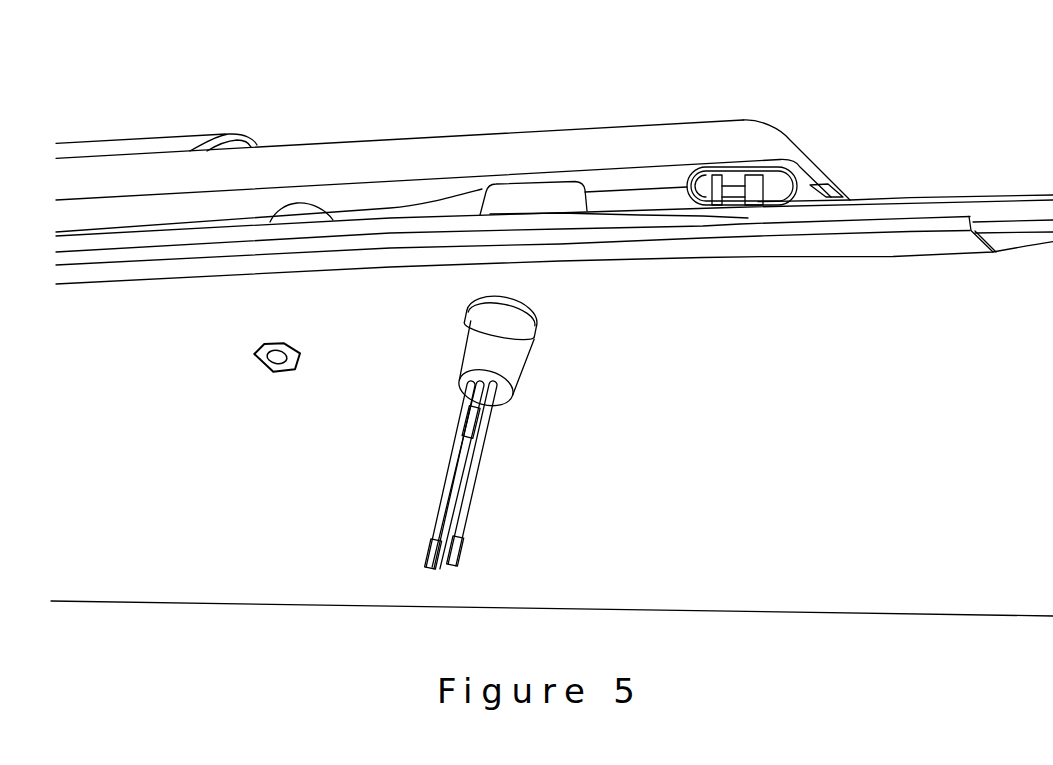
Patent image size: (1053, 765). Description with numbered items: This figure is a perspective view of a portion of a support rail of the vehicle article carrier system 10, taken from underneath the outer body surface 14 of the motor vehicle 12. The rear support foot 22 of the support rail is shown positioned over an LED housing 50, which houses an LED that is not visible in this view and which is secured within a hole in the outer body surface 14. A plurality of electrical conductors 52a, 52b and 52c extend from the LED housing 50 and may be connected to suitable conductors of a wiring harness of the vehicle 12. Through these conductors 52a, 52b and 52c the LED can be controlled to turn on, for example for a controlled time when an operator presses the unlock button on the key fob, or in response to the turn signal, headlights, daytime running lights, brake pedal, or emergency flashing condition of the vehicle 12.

The vehicle article carrier system 10 is at (192, 106).
The rear support foot 22 is at (745, 108).
The motor vehicle 12 is at (976, 187).
The outer body surface 14 is at (913, 197).
The LED housing 50 is at (544, 360).
The electrical conductor 52a is at (424, 571).
The electrical conductor 52b is at (435, 573).
The electrical conductor 52c is at (443, 573).